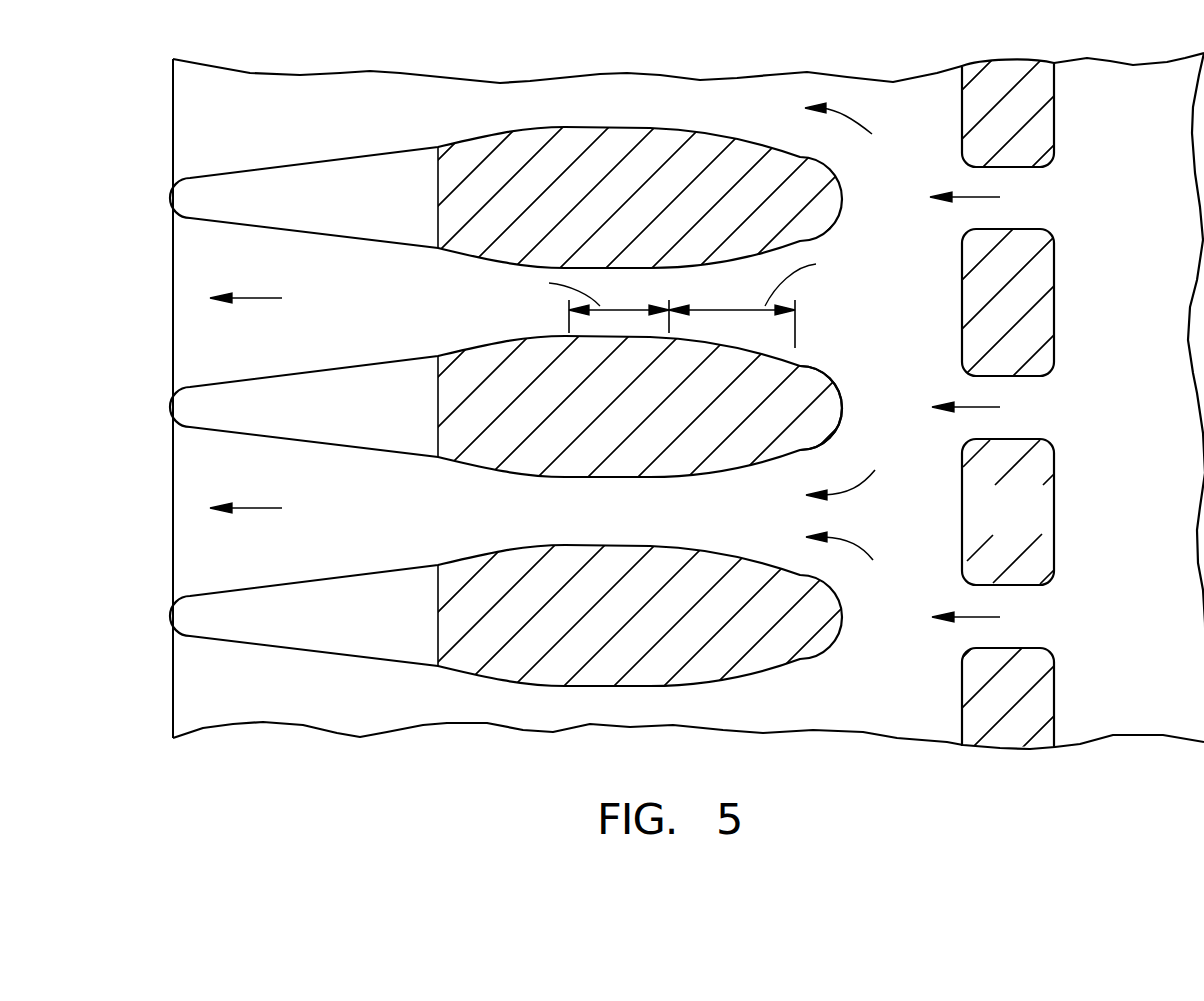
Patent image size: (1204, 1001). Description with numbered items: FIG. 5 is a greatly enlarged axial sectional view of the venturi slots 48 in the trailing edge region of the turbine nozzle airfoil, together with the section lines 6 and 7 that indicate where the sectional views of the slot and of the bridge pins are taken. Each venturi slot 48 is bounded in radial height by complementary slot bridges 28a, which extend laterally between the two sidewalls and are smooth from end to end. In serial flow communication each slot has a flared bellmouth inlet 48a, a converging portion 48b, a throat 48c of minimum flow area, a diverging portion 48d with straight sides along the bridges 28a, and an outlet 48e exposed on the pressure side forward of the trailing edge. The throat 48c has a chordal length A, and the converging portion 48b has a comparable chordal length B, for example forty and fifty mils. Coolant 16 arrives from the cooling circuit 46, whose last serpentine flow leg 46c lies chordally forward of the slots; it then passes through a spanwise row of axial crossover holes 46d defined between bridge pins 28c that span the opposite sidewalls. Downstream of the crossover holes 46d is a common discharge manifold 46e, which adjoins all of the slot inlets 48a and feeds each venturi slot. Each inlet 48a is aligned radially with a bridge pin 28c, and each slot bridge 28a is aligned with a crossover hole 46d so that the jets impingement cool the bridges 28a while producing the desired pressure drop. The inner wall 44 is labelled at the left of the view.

The platform / inner wall 44 is at (174, 234).
The cooling circuit 46 is at (1097, 86).
The third flow leg 46c is at (1157, 210).
The crossover holes 46d is at (1020, 438).
The discharge manifold 46e is at (910, 725).
The venturi slots 48 is at (212, 560).
The slot inlet 48a is at (859, 311).
The converging portion 48b is at (762, 285).
The throat 48c is at (653, 295).
The diverging portion 48d is at (447, 328).
The slot outlet 48e is at (276, 353).
The slot bridges 28a is at (682, 414).
The bridge pins 28c is at (1035, 527).
The coolant 16 is at (977, 409).
The section line FIG. 6 is at (578, 220).
The section line FIG. 7 is at (992, 42).